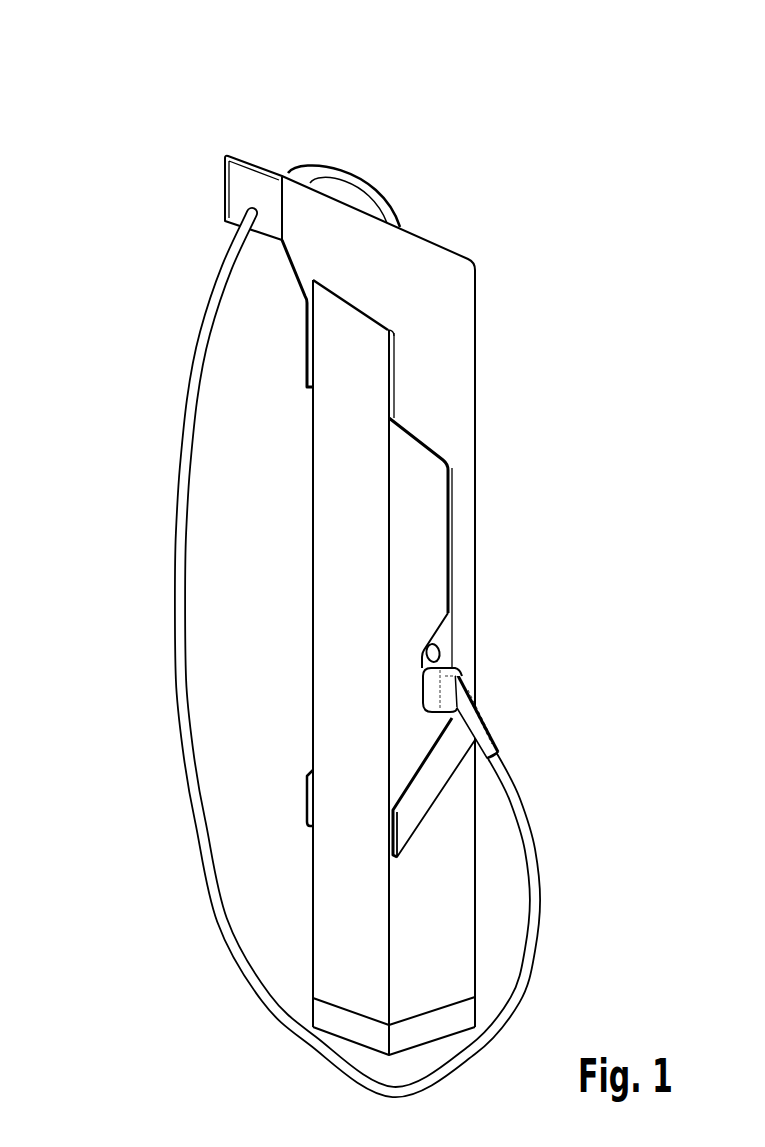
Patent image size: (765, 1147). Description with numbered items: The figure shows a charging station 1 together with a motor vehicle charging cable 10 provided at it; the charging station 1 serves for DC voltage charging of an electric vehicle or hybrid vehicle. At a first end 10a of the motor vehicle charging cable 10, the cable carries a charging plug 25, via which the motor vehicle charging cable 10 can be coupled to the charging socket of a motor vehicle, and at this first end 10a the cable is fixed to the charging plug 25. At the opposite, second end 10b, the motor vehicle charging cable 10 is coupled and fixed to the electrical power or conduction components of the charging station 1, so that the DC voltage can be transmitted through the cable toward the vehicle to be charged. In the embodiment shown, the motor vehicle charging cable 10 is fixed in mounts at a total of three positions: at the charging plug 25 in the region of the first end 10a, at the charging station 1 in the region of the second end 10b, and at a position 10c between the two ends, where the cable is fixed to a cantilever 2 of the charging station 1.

The charging station 1 is at (432, 87).
The cantilever 2 is at (332, 220).
The motor vehicle charging cable 10 is at (160, 535).
The first end 10a is at (512, 742).
The second end 10b is at (405, 222).
The position 10c is at (297, 163).
The charging plug 25 is at (430, 693).